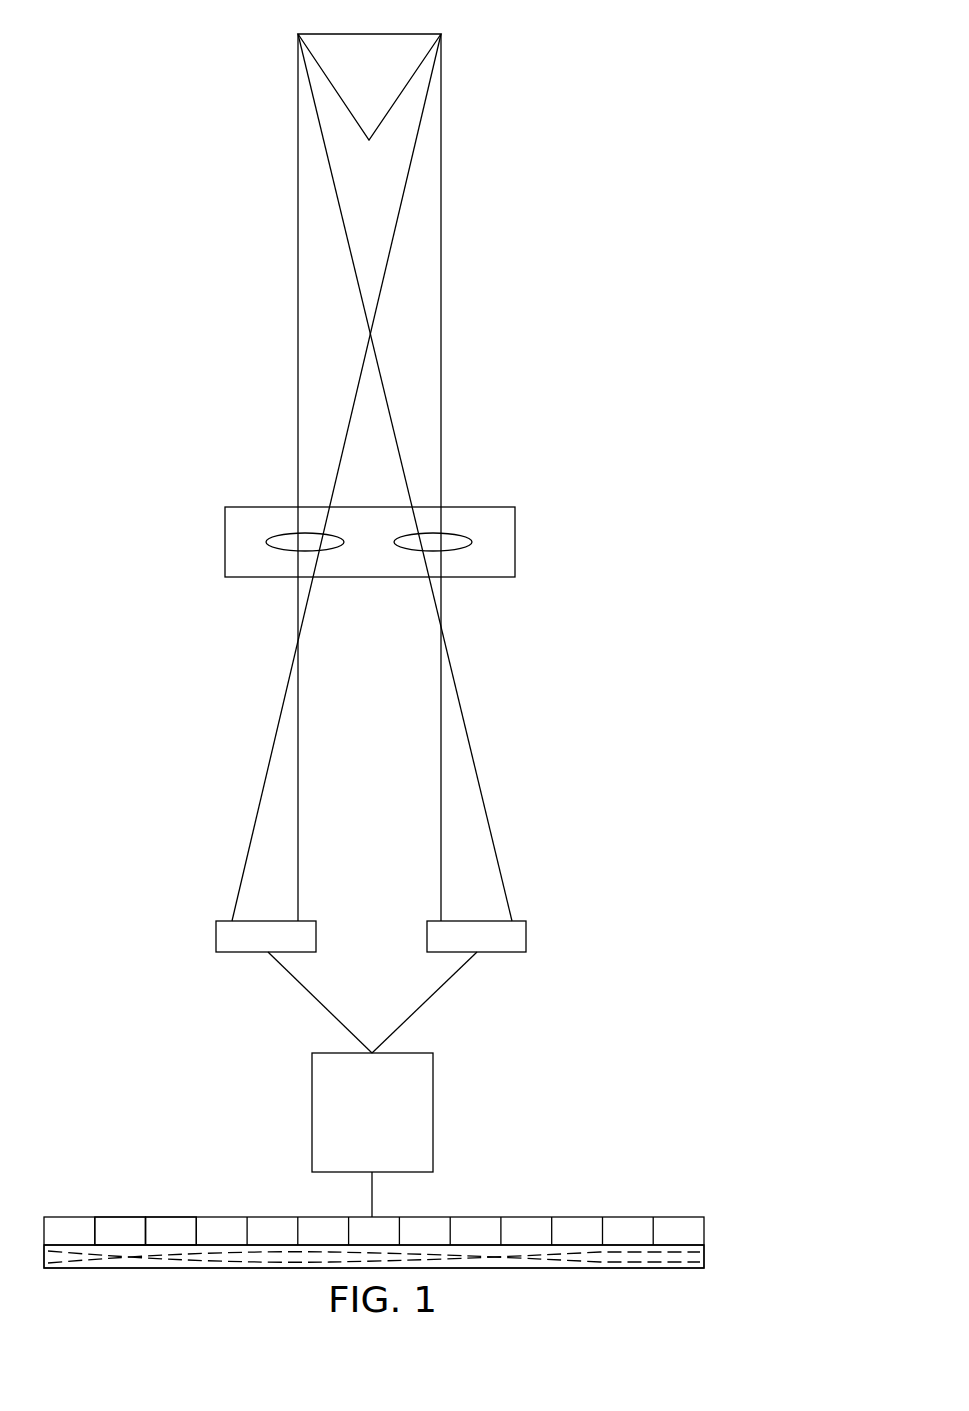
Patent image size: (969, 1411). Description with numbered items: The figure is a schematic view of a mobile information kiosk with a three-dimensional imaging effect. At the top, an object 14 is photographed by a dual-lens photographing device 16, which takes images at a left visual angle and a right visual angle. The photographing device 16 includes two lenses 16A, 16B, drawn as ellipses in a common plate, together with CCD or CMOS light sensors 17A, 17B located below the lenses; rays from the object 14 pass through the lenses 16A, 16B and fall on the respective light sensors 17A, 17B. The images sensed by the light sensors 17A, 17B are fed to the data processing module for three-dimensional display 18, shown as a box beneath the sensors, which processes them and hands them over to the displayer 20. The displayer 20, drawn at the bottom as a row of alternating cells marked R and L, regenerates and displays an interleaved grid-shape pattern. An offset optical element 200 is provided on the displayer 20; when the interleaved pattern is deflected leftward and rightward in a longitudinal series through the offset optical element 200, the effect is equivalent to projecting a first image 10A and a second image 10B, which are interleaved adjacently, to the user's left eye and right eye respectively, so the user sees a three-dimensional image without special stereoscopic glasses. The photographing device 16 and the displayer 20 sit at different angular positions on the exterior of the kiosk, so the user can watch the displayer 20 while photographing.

The object / screen 14 is at (368, 118).
The dual-lens photographing device 16 is at (515, 530).
The lens 16A is at (290, 550).
The lens 16B is at (448, 550).
The light sensor 17A is at (228, 938).
The light sensor 17B is at (518, 937).
The data processing module for three-dimensional display 18 is at (322, 1090).
The displayer 20 is at (630, 1208).
The first image 10A is at (112, 1222).
The second image 10B is at (183, 1225).
The offset optical element 200 is at (710, 1260).